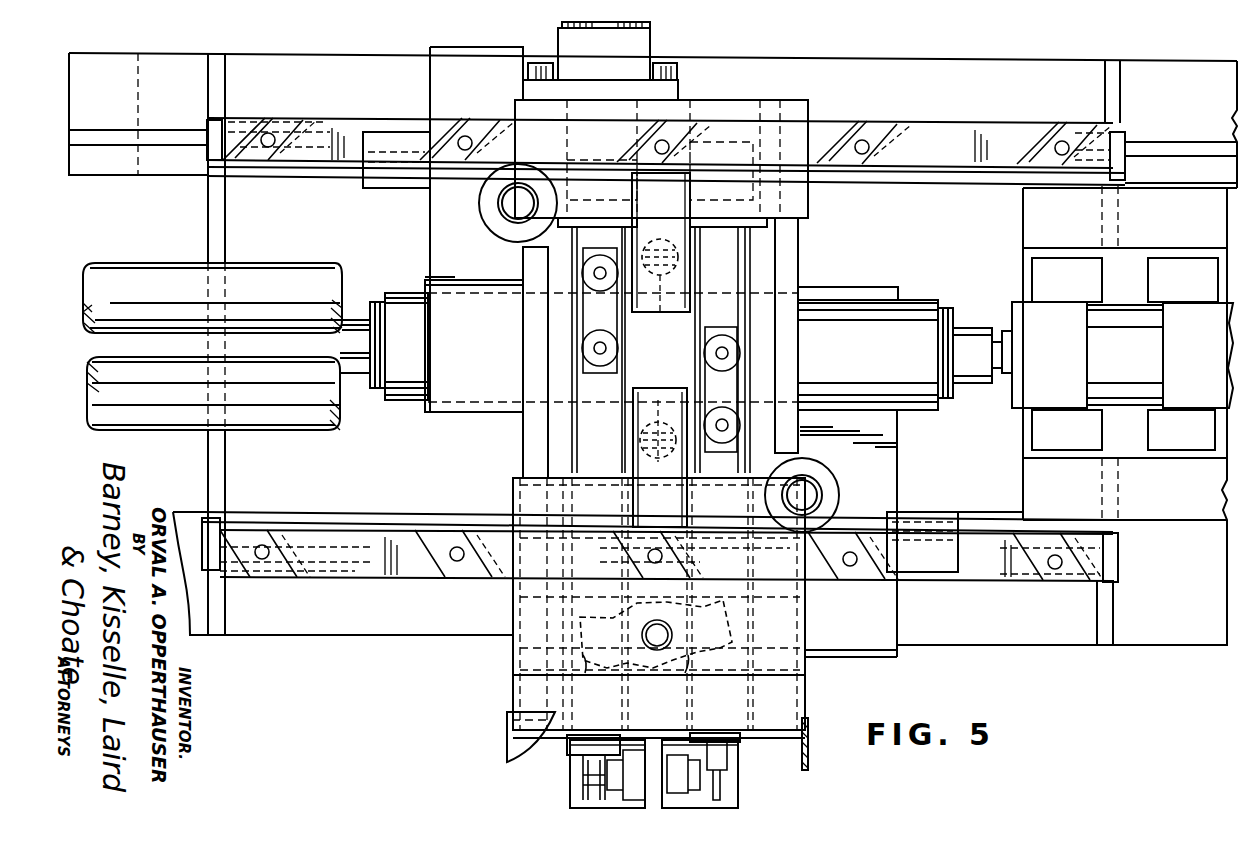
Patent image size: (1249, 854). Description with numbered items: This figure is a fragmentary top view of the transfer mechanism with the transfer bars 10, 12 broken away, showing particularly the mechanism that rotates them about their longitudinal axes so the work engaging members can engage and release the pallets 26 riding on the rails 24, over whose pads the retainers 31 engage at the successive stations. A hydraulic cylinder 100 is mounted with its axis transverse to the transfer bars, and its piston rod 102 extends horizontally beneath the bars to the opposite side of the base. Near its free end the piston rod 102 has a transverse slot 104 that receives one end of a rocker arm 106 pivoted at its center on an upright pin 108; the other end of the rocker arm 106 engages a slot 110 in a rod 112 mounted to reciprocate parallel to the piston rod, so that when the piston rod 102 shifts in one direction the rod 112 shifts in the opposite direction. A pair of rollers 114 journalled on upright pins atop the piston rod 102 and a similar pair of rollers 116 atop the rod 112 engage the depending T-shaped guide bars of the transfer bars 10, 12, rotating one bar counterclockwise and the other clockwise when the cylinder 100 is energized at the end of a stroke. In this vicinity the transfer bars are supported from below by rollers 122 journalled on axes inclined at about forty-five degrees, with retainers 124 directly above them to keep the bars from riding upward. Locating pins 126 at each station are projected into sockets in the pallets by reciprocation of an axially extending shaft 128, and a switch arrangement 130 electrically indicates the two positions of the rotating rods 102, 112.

The transfer bar 10 is at (164, 272).
The transfer bar 12 is at (167, 403).
The support rail 24 is at (980, 130).
The pallet 26 is at (285, 125).
The retainer 31 is at (405, 190).
The hydraulic cylinder 100 is at (640, 50).
The piston rod 102 is at (588, 440).
The transverse slot 104 is at (585, 675).
The rocker arm 106 is at (685, 674).
The upright pin 108 is at (648, 637).
The slot 110 is at (745, 636).
The rod 112 is at (745, 276).
The rollers 114 is at (588, 350).
The rollers 116 is at (732, 350).
The rollers 122 is at (661, 350).
The retainers 124 is at (664, 302).
The locating pins 126 is at (514, 207).
The shaft 128 is at (356, 372).
The switch arrangement 130 is at (562, 789).